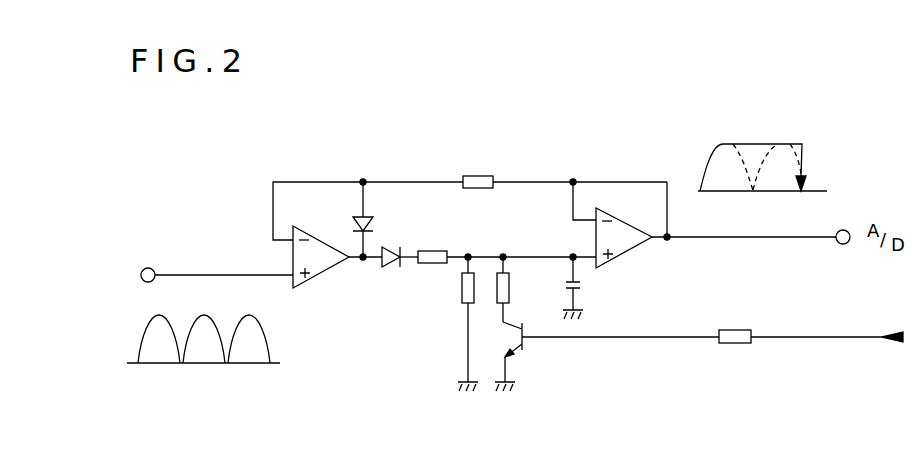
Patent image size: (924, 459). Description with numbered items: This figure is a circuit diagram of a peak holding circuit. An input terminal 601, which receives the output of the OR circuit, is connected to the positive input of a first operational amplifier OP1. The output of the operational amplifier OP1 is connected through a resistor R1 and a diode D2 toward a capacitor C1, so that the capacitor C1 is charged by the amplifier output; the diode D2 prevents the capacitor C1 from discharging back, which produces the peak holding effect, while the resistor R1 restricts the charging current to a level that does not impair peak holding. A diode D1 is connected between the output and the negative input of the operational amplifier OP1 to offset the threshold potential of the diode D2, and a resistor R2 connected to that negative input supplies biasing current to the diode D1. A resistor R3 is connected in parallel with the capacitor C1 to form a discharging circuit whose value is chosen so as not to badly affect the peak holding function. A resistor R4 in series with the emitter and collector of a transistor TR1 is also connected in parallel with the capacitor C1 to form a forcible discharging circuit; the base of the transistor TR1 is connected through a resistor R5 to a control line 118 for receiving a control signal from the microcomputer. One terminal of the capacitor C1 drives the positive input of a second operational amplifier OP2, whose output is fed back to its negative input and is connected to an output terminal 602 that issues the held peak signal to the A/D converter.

The input terminal 601 is at (150, 268).
The output terminal 602 is at (847, 230).
The control signal line 118 is at (815, 338).
The operational amplifier OP1 is at (321, 273).
The operational amplifier OP2 is at (631, 248).
The diode D1 is at (349, 219).
The diode D2 is at (385, 269).
The resistor R1 is at (432, 244).
The resistor R2 is at (478, 168).
The resistor R3 is at (454, 324).
The resistor R4 is at (518, 289).
The resistor R5 is at (735, 323).
The capacitor C1 is at (588, 288).
The transistor TR1 is at (532, 356).